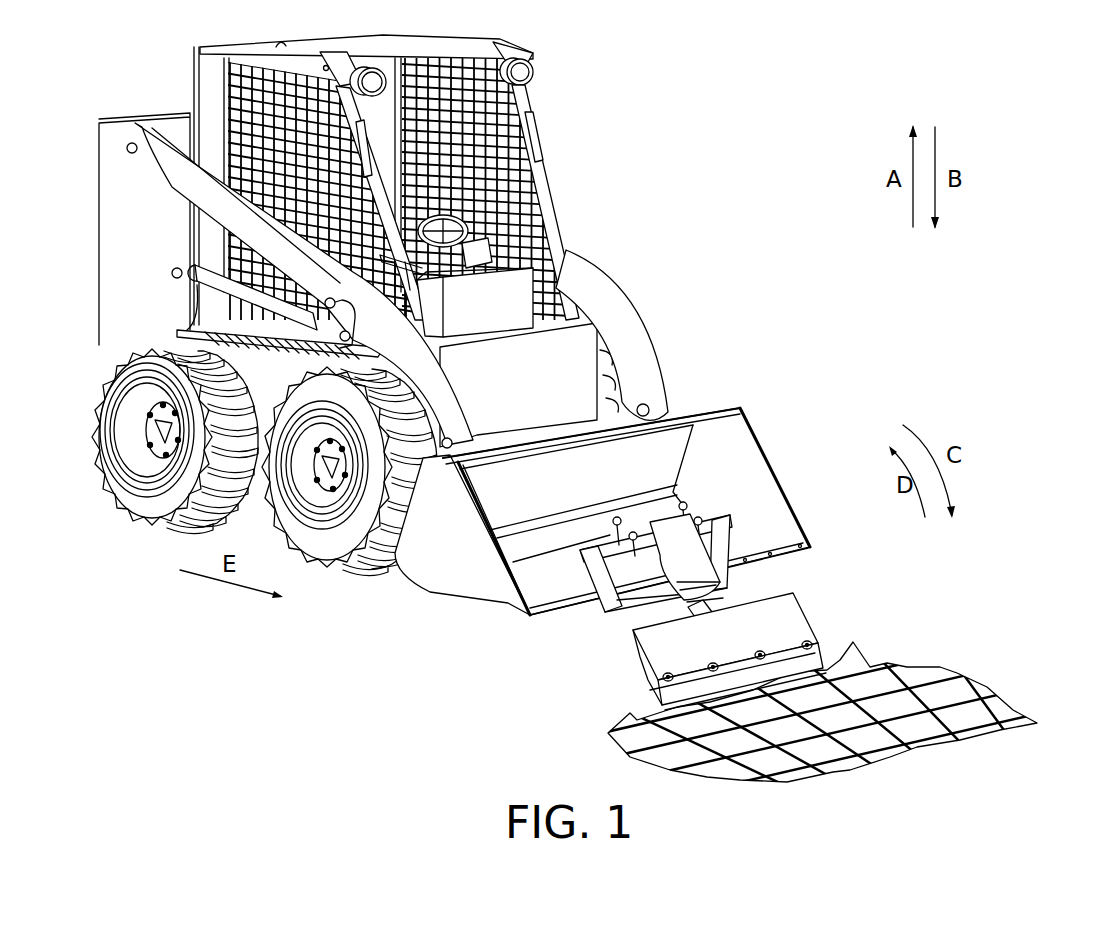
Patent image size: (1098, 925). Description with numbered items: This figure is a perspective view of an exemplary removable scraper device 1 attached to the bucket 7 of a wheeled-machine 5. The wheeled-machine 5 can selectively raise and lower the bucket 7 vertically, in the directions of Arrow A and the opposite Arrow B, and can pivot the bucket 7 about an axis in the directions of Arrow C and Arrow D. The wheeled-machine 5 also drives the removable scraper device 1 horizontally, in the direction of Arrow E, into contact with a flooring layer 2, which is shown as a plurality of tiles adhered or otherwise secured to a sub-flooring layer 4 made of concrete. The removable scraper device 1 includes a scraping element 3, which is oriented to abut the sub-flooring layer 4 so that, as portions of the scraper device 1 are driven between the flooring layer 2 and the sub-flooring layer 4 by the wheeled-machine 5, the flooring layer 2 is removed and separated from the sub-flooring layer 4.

The removable scraper device 1 is at (488, 305).
The flooring layer 2 is at (918, 672).
The scraping element 3 is at (785, 610).
The sub-flooring layer 4 is at (610, 701).
The wheeled-machine 5 is at (557, 187).
The bucket 7 is at (730, 437).